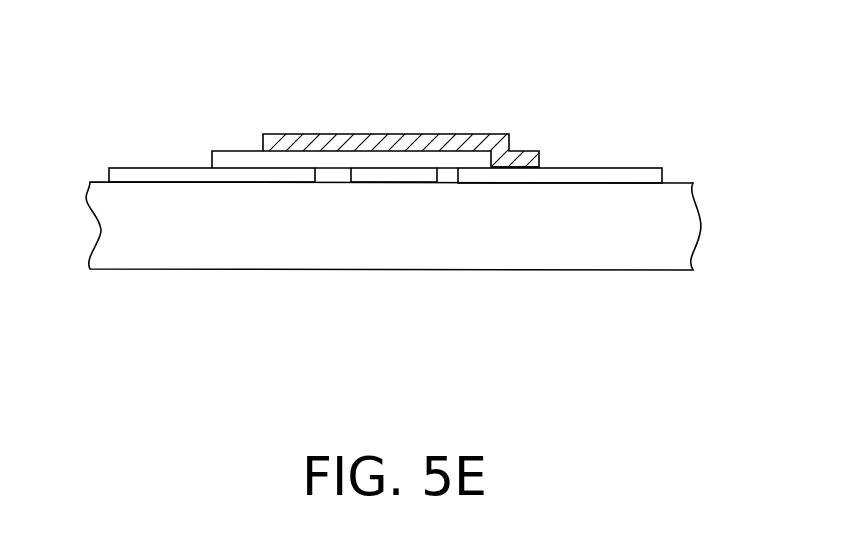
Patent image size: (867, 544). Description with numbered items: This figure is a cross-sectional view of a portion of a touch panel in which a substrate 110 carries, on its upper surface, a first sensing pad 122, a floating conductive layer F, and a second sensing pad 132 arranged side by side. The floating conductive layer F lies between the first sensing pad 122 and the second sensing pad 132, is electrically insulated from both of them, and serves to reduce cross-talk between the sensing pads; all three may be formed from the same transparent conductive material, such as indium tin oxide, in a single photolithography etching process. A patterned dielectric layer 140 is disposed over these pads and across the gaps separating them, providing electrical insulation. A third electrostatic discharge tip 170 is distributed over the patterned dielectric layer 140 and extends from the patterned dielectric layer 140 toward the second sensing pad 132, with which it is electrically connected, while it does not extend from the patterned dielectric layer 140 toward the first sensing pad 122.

The substrate 110 is at (677, 253).
The first sensing pad 122 is at (153, 178).
The floating conductive layer F is at (402, 175).
The second sensing pad 132 is at (613, 177).
The patterned dielectric layer 140 is at (450, 175).
The third electrostatic discharge tip 170 is at (383, 143).